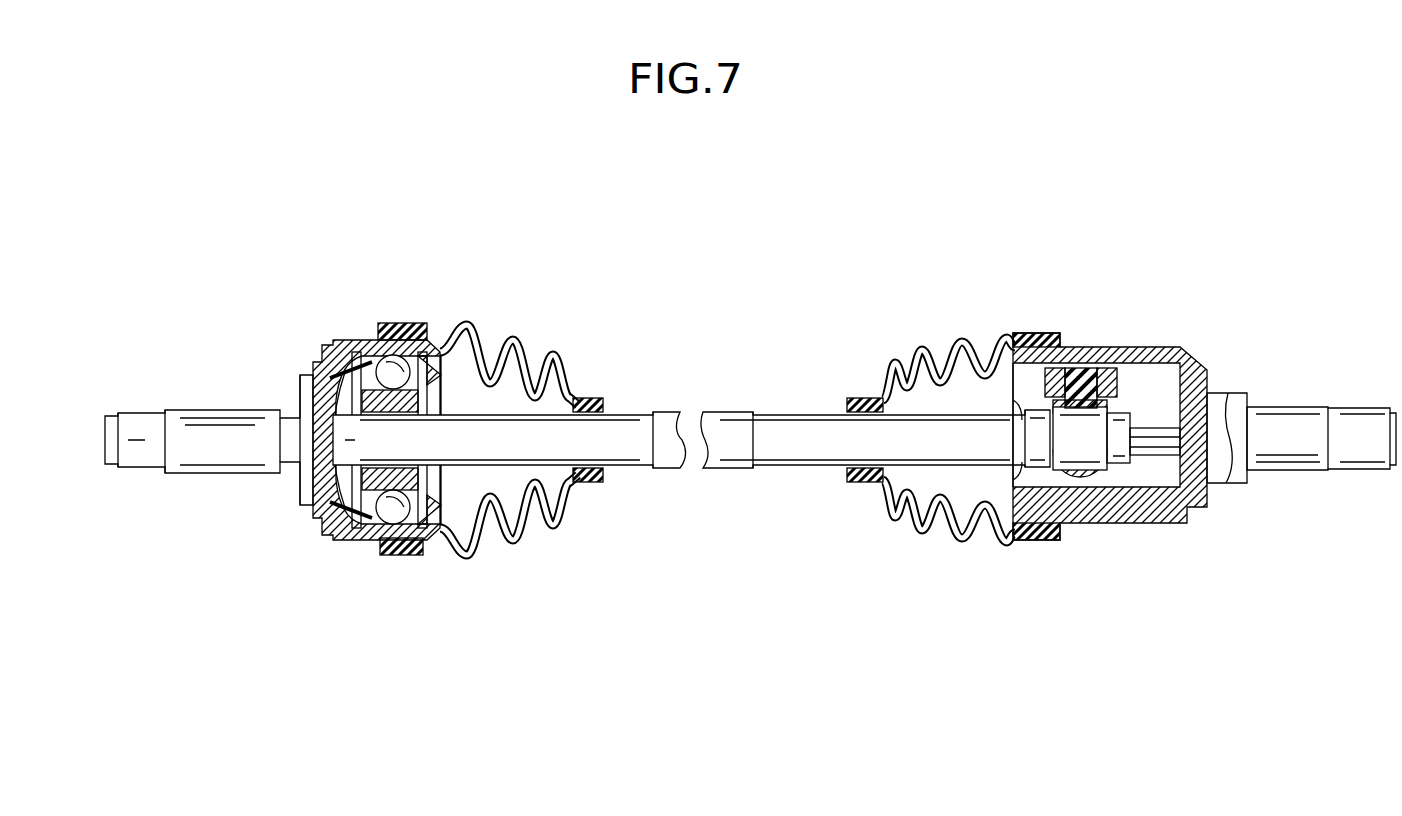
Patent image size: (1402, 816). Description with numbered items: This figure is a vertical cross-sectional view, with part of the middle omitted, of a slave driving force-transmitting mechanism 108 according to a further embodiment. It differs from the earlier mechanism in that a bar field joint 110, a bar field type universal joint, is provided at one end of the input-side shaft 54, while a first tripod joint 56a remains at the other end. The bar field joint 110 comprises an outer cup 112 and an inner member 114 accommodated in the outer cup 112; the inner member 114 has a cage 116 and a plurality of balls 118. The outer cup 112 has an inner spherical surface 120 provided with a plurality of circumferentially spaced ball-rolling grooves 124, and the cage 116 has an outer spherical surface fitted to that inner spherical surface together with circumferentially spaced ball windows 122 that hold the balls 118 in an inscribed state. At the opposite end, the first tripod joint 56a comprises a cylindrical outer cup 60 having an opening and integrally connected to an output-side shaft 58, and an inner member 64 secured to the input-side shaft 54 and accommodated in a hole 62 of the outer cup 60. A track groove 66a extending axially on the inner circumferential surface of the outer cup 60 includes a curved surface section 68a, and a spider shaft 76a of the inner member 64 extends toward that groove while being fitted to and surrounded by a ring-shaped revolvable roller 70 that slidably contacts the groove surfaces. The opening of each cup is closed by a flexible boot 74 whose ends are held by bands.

The slave driving force-transmitting mechanism 108 is at (1190, 168).
The bar field joint 110 is at (477, 310).
The outer cup 112 is at (338, 540).
The inner member 114 is at (368, 338).
The cage 116 is at (437, 338).
The balls 118 is at (393, 515).
The inner spherical surface 120 is at (322, 520).
The ball windows 122 is at (397, 335).
The ball-rolling grooves 124 is at (363, 542).
The input-side shaft 54 is at (630, 416).
The output-side shaft 58 is at (225, 425).
The flexible boot 74 is at (532, 350).
The first tripod joint 56a is at (1178, 272).
The outer cup 60 is at (1123, 520).
The hole 62 is at (1020, 485).
The inner member 64 is at (1150, 382).
The track groove 66a is at (1035, 345).
The curved surface section 68a is at (1152, 380).
The revolvable roller 70 is at (1106, 366).
The spider shaft 76a is at (1082, 398).